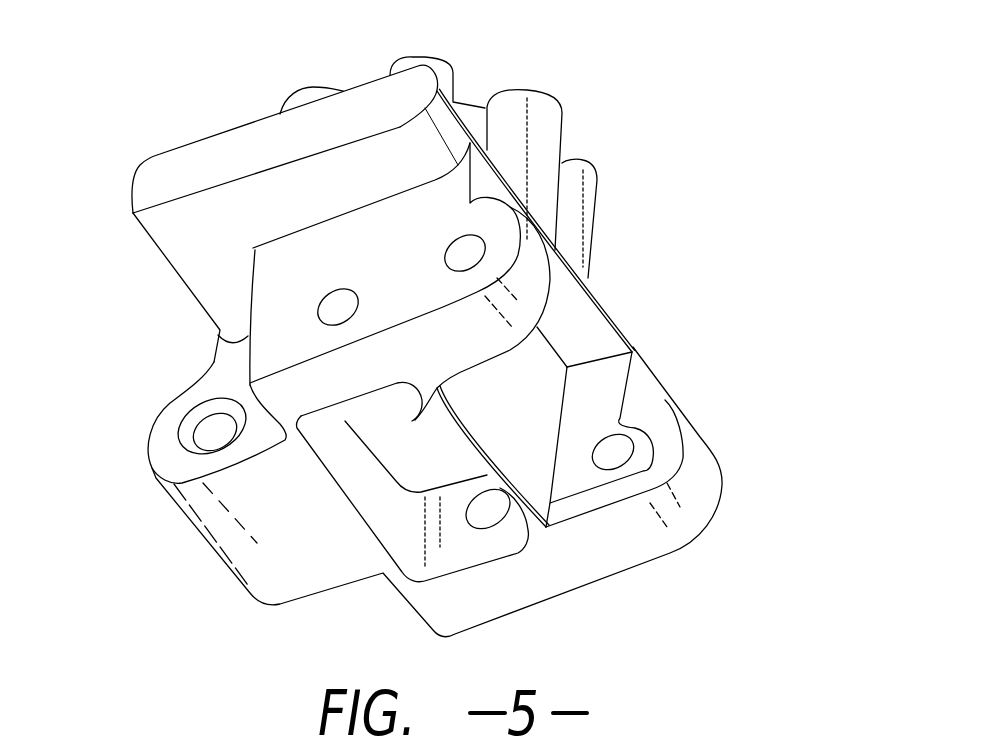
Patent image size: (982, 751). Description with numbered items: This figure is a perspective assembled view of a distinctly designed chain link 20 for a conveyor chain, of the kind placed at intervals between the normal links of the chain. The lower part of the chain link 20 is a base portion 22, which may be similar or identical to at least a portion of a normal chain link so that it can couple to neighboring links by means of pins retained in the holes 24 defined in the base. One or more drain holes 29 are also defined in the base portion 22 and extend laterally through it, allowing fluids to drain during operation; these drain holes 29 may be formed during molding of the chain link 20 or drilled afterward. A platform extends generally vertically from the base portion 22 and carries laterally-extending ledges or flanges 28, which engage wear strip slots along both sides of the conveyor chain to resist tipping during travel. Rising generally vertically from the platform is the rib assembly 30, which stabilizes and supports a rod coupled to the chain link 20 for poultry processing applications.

The chain link 20 is at (125, 93).
The base portion 22 is at (293, 297).
The holes 24 is at (207, 438).
The flanges 28 is at (173, 235).
The drain holes 29 is at (332, 313).
The rib assembly 30 is at (580, 135).